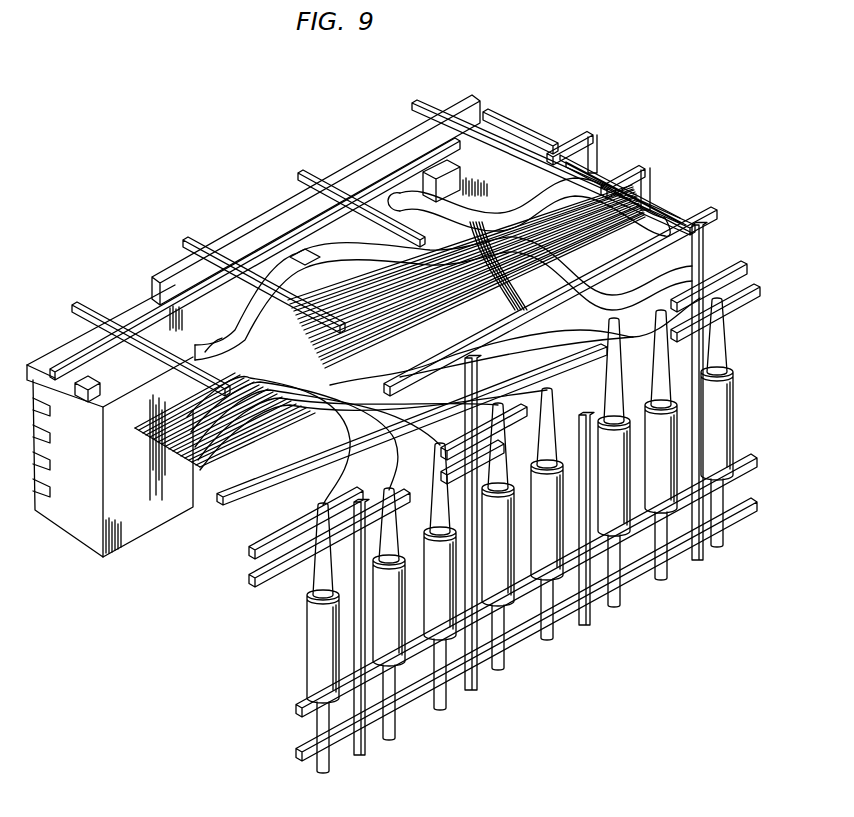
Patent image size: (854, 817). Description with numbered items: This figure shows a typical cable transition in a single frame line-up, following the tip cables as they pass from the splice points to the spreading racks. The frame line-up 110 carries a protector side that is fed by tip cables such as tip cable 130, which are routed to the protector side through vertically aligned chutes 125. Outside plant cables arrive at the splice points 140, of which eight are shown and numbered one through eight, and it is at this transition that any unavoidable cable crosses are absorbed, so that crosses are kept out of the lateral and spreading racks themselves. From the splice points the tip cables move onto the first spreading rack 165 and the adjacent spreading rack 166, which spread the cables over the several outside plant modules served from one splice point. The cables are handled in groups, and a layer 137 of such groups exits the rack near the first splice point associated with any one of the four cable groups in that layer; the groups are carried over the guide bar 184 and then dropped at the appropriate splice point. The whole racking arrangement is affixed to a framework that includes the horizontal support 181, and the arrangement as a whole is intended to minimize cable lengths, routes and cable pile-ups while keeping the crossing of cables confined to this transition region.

The first frame line-up 110 is at (516, 118).
The spreading rack 166 is at (575, 143).
The first spreading rack 165 is at (669, 215).
The tip cable 130 is at (663, 223).
The splice point 140 is at (730, 390).
The chute 125 is at (177, 383).
The layer 137 is at (250, 378).
The guide bar 184 is at (253, 488).
The horizontal support 181 is at (253, 571).